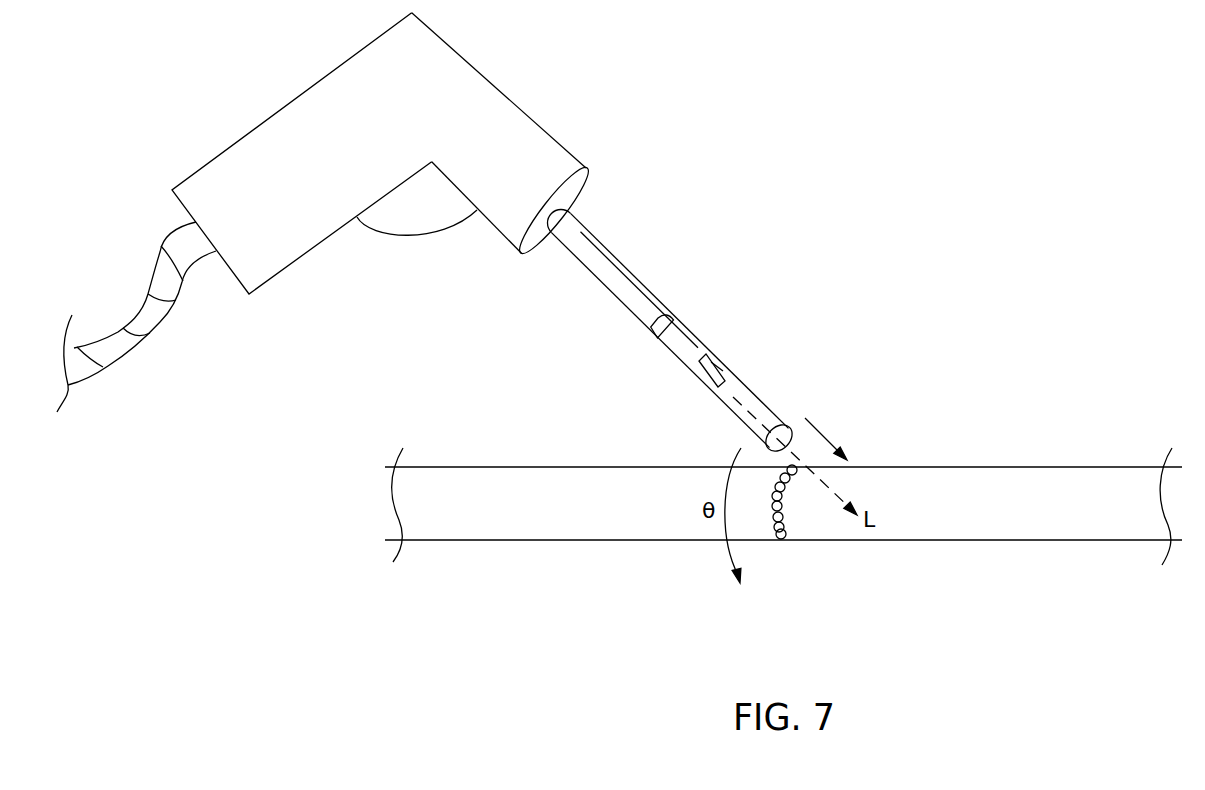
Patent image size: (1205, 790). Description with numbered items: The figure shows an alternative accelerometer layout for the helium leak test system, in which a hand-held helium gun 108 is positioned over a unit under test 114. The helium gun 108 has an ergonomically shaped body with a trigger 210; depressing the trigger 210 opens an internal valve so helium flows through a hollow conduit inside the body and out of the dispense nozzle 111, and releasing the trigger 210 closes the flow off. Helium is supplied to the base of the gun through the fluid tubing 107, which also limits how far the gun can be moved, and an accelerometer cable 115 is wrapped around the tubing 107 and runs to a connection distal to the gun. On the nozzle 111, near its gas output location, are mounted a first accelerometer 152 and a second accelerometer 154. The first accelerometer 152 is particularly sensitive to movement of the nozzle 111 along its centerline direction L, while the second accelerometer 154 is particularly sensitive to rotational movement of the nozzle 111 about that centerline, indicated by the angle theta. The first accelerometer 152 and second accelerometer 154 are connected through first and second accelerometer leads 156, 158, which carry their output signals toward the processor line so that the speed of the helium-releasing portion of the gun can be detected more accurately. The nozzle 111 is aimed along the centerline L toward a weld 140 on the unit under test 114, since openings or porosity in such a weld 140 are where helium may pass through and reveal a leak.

The helium gun 108 is at (548, 92).
The trigger 210 is at (419, 217).
The fluid tubing 107 is at (162, 315).
The accelerometer cable 115 is at (133, 342).
The second accelerometer lead 158 is at (610, 287).
The dispense nozzle 111 is at (770, 398).
The second accelerometer 154 is at (683, 315).
The first accelerometer lead 156 is at (707, 345).
The first accelerometer 152 is at (723, 370).
The unit under test 114 is at (947, 432).
The weld 140 is at (798, 498).